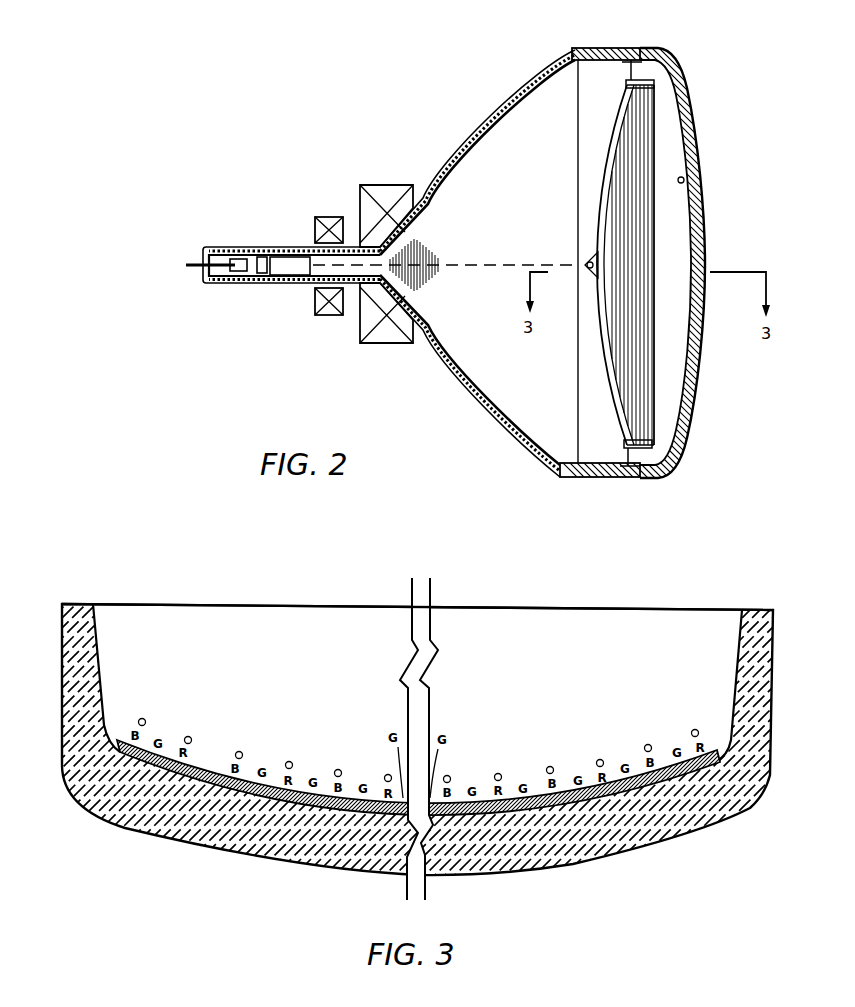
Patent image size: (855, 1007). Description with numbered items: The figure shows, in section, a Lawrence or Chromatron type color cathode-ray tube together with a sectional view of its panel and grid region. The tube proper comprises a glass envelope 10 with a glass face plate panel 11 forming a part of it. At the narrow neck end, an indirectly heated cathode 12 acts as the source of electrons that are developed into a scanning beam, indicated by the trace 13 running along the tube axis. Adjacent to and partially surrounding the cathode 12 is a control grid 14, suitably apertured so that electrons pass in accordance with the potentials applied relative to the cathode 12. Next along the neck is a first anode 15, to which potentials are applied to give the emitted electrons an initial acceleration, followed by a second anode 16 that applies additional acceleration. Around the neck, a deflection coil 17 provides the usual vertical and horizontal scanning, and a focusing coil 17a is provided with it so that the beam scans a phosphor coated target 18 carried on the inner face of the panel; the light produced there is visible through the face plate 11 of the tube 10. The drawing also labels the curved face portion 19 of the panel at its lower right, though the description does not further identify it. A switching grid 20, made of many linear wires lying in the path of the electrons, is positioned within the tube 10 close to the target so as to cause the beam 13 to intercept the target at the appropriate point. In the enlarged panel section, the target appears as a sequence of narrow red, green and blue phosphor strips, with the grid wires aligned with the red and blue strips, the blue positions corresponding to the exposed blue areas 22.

In FIG. 2, the glass envelope 10 is at (495, 85).
In FIG. 2, the glass face plate panel 11 is at (596, 478).
In FIG. 3, the glass face plate panel 11 is at (203, 850).
In FIG. 2, the indirectly heated cathode 12 is at (226, 258).
In FIG. 2, the scanning beam trace 13 is at (460, 266).
In FIG. 2, the control grid 14 is at (240, 274).
In FIG. 2, the first anode 15 is at (263, 256).
In FIG. 2, the second anode 16 is at (291, 276).
In FIG. 2, the deflection coil 17 is at (370, 344).
In FIG. 2, the focusing coil 17a is at (322, 316).
In FIG. 2, the phosphor coated target 18 is at (684, 179).
In FIG. 3, the phosphor coated target 18 is at (538, 778).
In FIG. 2, the face panel 19 is at (696, 412).
In FIG. 2, the switching grid 20 is at (616, 121).
In FIG. 3, the switching grid 20 is at (146, 718).
In FIG. 3, the exposed blue areas 22 is at (208, 752).